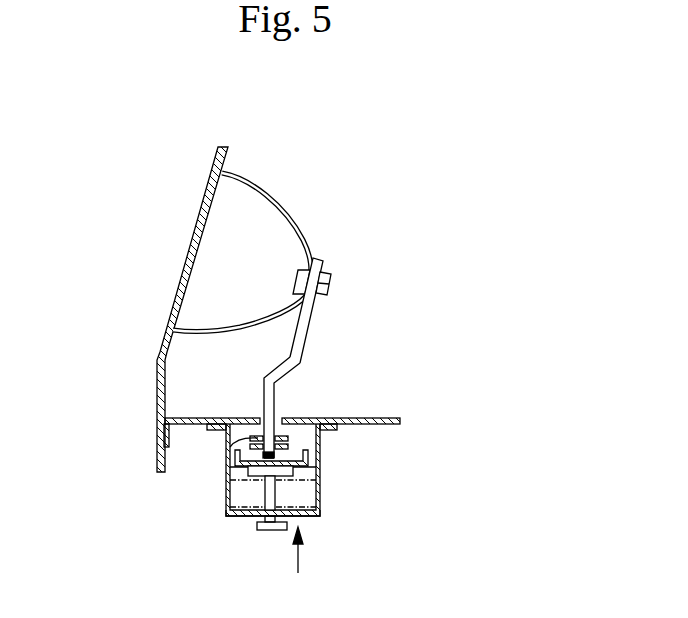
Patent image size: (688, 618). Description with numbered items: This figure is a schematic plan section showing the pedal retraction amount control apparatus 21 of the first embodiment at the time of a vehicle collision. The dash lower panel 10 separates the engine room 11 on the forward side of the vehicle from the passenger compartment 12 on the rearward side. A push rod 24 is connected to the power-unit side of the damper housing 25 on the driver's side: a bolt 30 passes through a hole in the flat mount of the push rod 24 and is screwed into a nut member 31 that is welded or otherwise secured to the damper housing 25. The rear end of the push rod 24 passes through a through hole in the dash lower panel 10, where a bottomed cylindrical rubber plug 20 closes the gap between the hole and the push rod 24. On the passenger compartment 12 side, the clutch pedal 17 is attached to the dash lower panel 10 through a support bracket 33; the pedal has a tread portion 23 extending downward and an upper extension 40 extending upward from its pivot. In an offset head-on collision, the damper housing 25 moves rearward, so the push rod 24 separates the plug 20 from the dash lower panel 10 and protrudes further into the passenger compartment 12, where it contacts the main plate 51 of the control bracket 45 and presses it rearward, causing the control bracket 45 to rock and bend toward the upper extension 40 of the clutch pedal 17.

The dash lower panel 10 is at (380, 417).
The engine room 11 is at (385, 358).
The passenger compartment 12 is at (408, 480).
The clutch pedal 17 is at (245, 528).
The rubber plug 20 is at (288, 440).
The pedal retraction amount control apparatus 21 is at (370, 327).
The tread portion 23 is at (262, 531).
The push rod 24 is at (250, 392).
The damper housing 25 is at (273, 195).
The bolt 30 is at (323, 263).
The nut member 31 is at (297, 278).
The support bracket 33 is at (320, 512).
The upper extension 40 is at (270, 485).
The control bracket 45 is at (312, 462).
The main plate 51 is at (232, 438).